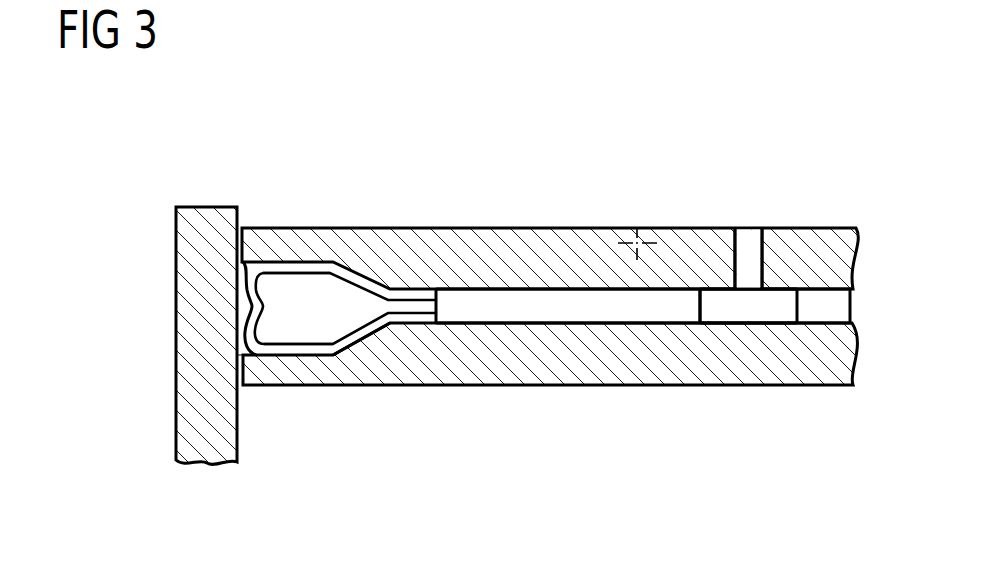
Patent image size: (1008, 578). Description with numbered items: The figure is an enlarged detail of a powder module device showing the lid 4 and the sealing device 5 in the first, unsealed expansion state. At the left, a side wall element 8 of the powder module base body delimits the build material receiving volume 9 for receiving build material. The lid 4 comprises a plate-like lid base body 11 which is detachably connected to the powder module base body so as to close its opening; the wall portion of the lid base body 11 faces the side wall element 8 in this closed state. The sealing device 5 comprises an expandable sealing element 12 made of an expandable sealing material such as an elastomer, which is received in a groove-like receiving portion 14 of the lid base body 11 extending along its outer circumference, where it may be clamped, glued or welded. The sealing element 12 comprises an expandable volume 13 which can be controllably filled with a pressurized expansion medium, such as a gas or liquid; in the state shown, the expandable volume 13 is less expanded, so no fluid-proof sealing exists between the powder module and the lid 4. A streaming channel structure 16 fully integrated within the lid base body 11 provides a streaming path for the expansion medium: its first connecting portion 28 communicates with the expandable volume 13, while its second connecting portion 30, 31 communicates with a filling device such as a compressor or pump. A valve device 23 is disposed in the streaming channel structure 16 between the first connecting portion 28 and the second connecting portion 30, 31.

The lid 4 is at (286, 127).
The sealing device 5 is at (238, 395).
The side wall element 8 is at (188, 373).
The build material receiving volume 9 is at (542, 410).
The lid base body 11 is at (494, 240).
The expandable sealing element 12 is at (277, 287).
The expandable volume 13 is at (307, 318).
The receiving portion 14 is at (308, 265).
The streaming channel structure 16 is at (567, 313).
The valve device 23 is at (752, 312).
The first connecting portion 28 is at (389, 334).
The second connecting portion 30 is at (751, 213).
The second connecting portion 31 is at (748, 258).